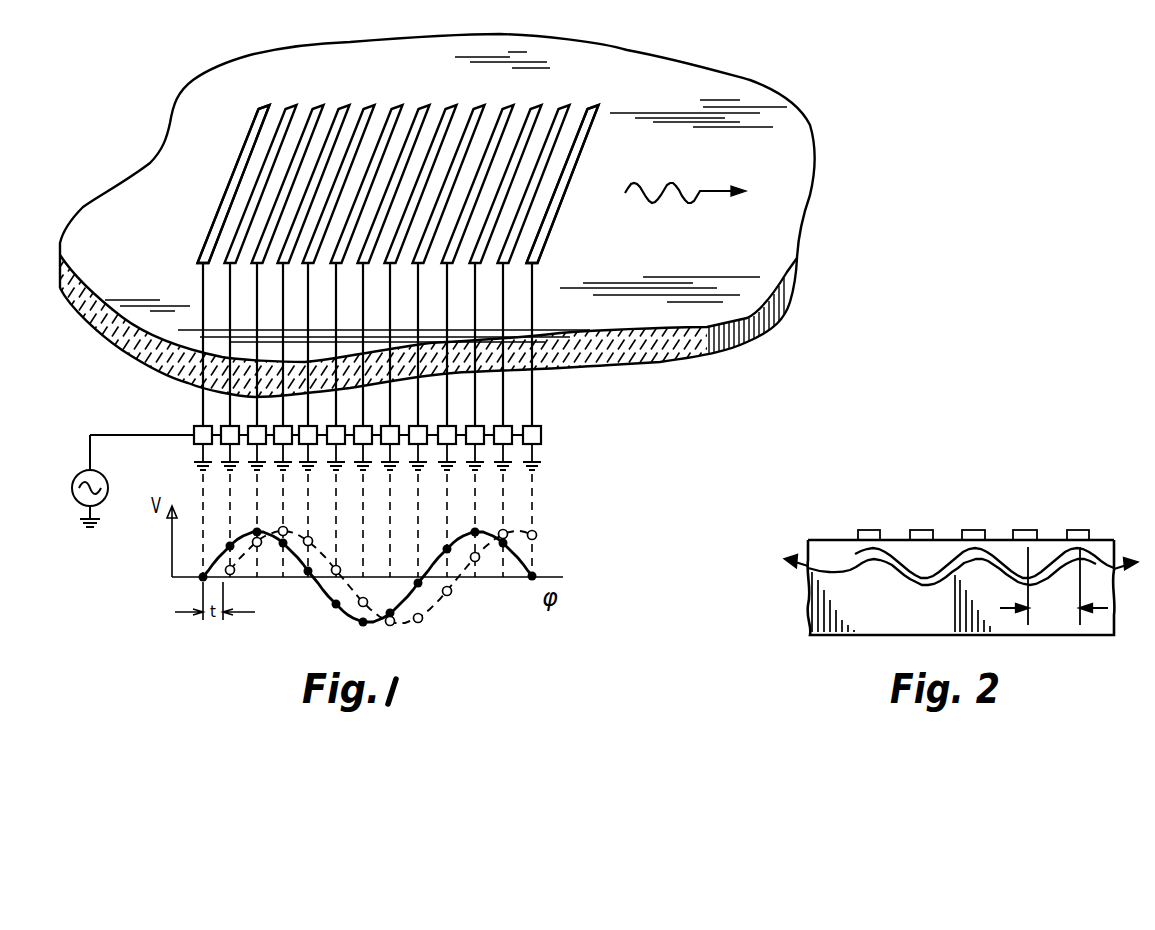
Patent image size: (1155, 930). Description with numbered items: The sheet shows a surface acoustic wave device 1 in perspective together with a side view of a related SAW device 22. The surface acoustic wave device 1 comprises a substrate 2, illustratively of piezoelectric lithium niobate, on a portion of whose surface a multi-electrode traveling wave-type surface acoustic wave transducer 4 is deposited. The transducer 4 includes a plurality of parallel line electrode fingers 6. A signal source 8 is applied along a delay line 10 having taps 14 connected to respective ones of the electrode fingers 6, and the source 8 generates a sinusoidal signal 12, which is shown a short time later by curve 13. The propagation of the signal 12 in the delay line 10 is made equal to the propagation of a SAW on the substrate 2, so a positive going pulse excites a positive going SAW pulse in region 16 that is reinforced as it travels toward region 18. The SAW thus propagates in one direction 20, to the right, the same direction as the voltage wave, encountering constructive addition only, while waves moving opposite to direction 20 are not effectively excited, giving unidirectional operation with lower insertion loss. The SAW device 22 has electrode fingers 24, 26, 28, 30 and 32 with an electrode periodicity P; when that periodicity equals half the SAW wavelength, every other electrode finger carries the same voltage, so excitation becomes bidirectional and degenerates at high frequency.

In FIG. 1, the surface acoustic wave device 1 is at (844, 234).
In FIG. 1, the substrate 2 is at (770, 335).
In FIG. 1, the traveling wave-type surface acoustic wave transducer 4 is at (447, 82).
In FIG. 1, the electrode fingers 6 is at (263, 100).
In FIG. 1, the signal source 8 is at (72, 492).
In FIG. 1, the delay line 10 is at (541, 436).
In FIG. 1, the sinusoidal signal 12 is at (522, 561).
In FIG. 1, the curve 13 is at (531, 533).
In FIG. 1, the taps 14 is at (485, 404).
In FIG. 1, the region 16 is at (206, 243).
In FIG. 1, the region 18 is at (546, 240).
In FIG. 1, the direction 20 is at (710, 190).
In FIG. 2, the SAW device 22 is at (808, 622).
In FIG. 2, the electrode finger 24 is at (1085, 519).
In FIG. 2, the electrode finger 26 is at (1034, 519).
In FIG. 2, the electrode finger 28 is at (980, 519).
In FIG. 2, the electrode finger 30 is at (927, 519).
In FIG. 2, the electrode finger 32 is at (876, 519).